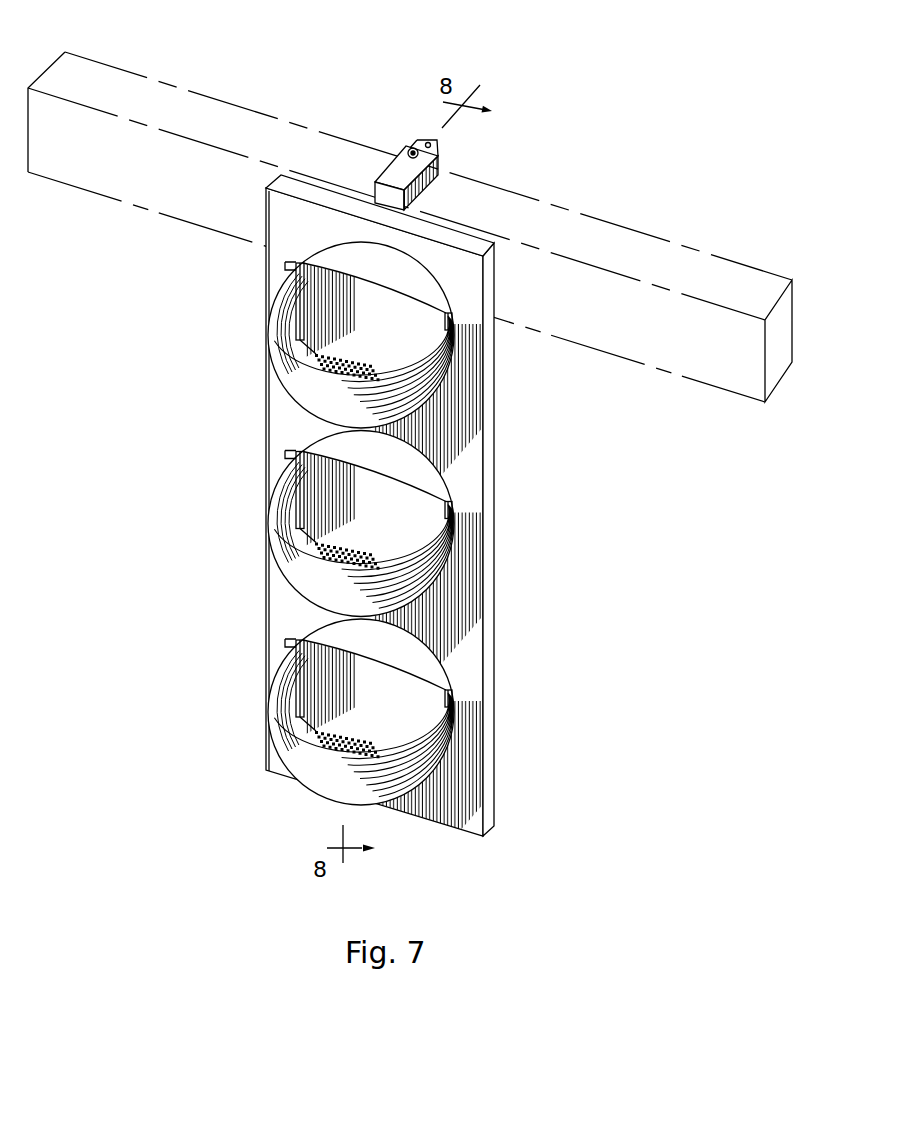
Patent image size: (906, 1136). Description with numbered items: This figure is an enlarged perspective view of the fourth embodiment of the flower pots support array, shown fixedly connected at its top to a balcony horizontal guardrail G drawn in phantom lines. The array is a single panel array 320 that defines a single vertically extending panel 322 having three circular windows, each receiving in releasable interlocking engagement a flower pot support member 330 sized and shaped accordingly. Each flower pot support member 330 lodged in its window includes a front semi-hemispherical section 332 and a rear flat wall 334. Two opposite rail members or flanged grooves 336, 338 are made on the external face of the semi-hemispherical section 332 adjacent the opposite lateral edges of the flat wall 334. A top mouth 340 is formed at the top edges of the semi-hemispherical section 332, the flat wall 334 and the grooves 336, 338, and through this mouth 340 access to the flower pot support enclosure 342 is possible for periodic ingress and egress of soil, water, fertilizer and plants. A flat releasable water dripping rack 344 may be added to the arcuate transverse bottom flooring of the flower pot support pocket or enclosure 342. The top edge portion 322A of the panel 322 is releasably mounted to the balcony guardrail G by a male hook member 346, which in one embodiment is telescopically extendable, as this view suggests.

The balcony guardrail G is at (128, 98).
The single panel array 320 is at (372, 460).
The panel 322 is at (368, 460).
The top edge portion of panel 322A is at (305, 192).
The flower pot support member 330 is at (373, 335).
The front semi-hemispherical section 332 is at (363, 368).
The rear flat wall 334 is at (397, 317).
The rail member or flanged groove 336 is at (297, 290).
The rail member or flanged groove 338 is at (452, 317).
The top mouth 340 is at (452, 510).
The flower pot support enclosure 342 is at (347, 517).
The flat releasable water dripping rack 344 is at (315, 716).
The male hook member 346 is at (401, 158).